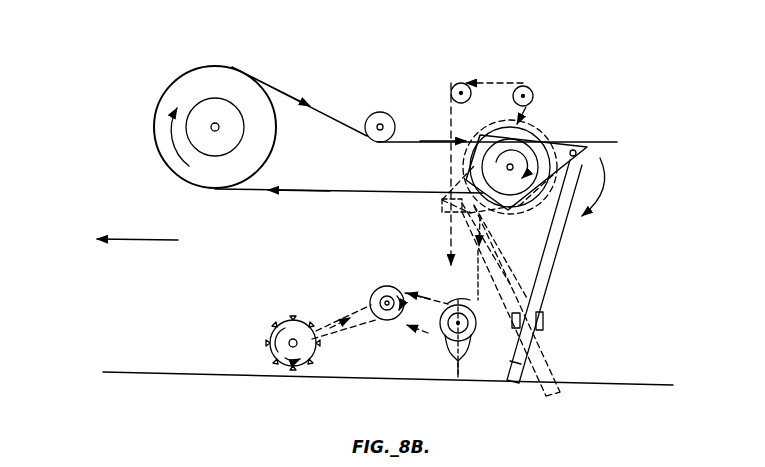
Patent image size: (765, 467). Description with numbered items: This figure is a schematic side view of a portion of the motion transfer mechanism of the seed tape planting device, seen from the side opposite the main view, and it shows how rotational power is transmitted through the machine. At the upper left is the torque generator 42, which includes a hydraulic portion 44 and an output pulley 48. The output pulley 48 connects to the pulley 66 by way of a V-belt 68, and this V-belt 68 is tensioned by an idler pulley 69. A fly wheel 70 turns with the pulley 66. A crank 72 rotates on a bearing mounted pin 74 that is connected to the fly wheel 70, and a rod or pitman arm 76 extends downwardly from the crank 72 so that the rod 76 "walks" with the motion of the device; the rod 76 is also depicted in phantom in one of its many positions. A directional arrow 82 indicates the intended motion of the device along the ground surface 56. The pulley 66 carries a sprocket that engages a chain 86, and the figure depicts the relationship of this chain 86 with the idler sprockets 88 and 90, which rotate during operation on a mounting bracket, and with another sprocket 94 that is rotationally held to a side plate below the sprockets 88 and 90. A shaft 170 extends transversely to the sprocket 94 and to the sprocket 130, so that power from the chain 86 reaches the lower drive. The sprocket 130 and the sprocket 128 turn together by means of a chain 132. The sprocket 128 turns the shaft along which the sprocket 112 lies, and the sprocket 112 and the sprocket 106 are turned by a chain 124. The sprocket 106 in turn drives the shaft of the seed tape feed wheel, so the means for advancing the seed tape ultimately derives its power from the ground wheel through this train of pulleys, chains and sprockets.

The torque generator 42 is at (232, 64).
The output pulley 48 is at (163, 140).
The hydraulic portion 44 is at (200, 152).
The V-belt 68 is at (320, 194).
The idler pulley 69 is at (386, 112).
The idler sprocket 88 is at (461, 82).
The idler sprocket 90 is at (524, 85).
The chain 86 is at (450, 242).
The pulley 66 is at (528, 156).
The fly wheel 70 is at (574, 140).
The bearing mounted pin 74 is at (590, 152).
The crank 72 is at (600, 176).
The rod or pitman arm 76 is at (552, 268).
The ground surface 56 is at (124, 372).
The sprocket 130 is at (470, 327).
The sprocket 94 is at (470, 346).
The shaft 170 is at (470, 301).
The sprocket 128 is at (385, 285).
The sprocket 106 is at (312, 354).
The chain 124 is at (328, 321).
The sprocket 112 is at (389, 322).
The chain 132 is at (427, 334).
The directional arrow 82 is at (140, 241).